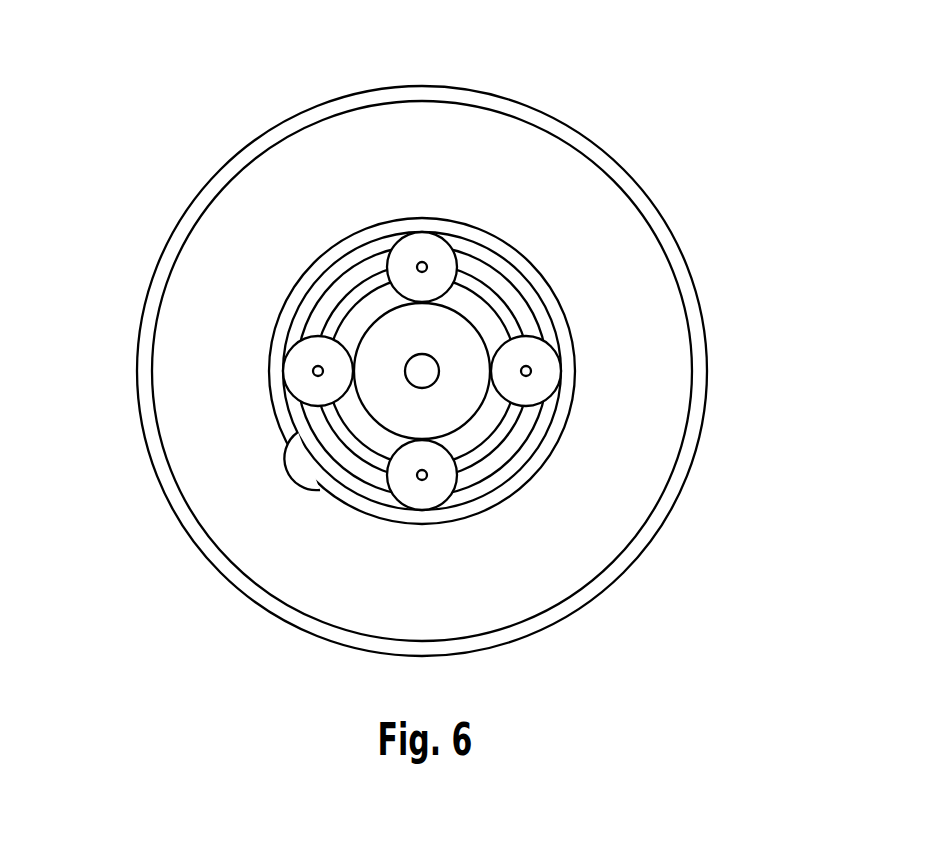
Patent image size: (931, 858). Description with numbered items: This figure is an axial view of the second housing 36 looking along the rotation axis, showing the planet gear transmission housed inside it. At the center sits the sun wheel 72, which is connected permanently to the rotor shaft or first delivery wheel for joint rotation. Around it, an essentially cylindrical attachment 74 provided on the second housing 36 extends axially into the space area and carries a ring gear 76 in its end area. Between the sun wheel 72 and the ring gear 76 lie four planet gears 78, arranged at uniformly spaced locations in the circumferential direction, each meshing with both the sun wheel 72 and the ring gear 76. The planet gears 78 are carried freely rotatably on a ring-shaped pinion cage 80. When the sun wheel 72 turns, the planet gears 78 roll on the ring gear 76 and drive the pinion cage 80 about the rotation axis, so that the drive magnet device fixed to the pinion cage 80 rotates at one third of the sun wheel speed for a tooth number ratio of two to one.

The second housing 36 is at (633, 180).
The sun wheel 72 is at (468, 402).
The attachment 74 is at (572, 330).
The ring gear 76 is at (332, 462).
The planet gears 78 is at (307, 353).
The pinion cage 80 is at (478, 268).